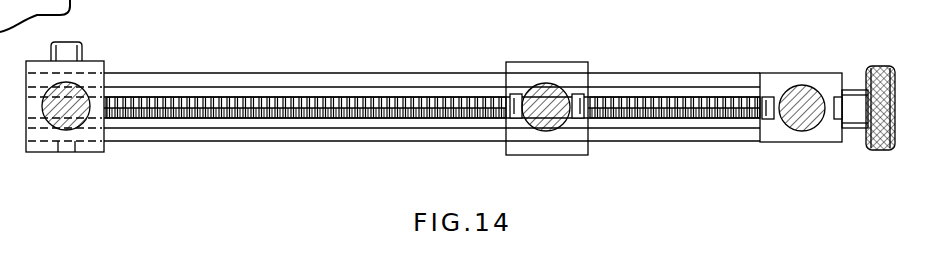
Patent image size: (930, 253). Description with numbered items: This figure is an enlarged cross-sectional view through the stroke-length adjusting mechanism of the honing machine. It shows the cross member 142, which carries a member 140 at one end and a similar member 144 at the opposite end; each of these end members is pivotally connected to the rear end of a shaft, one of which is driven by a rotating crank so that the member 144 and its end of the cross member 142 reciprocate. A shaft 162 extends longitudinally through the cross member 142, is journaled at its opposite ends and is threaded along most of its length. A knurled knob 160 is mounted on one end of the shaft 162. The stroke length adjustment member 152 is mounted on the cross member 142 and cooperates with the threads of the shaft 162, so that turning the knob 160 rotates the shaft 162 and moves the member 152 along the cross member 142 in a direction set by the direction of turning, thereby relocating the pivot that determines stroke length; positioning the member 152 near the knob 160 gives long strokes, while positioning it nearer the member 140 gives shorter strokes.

The member 140 is at (96, 66).
The cross member 142 is at (257, 78).
The member 144 is at (788, 83).
The stroke length adjustment member 152 is at (570, 66).
The knurled knob 160 is at (880, 150).
The shaft 162 is at (382, 115).